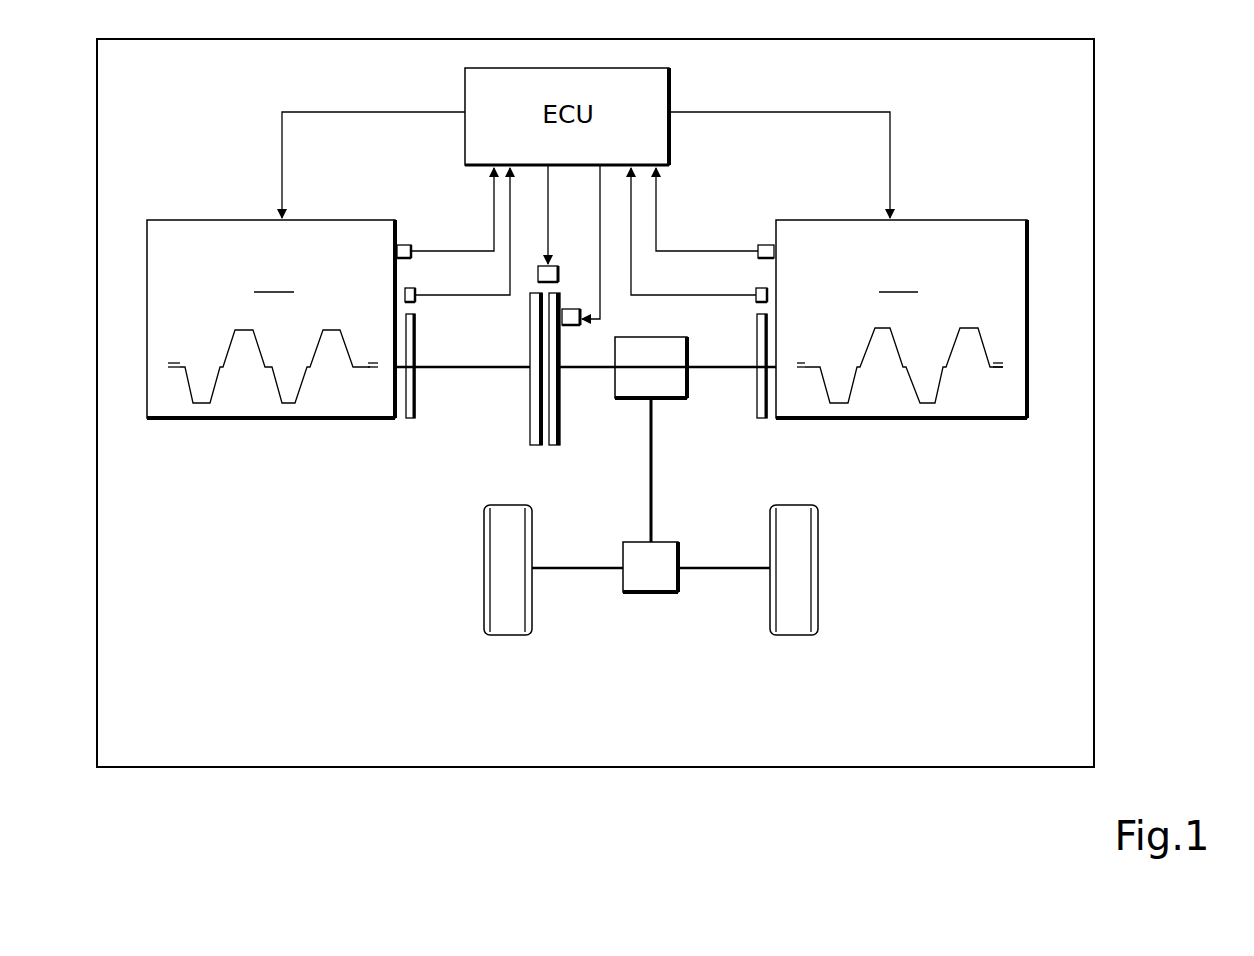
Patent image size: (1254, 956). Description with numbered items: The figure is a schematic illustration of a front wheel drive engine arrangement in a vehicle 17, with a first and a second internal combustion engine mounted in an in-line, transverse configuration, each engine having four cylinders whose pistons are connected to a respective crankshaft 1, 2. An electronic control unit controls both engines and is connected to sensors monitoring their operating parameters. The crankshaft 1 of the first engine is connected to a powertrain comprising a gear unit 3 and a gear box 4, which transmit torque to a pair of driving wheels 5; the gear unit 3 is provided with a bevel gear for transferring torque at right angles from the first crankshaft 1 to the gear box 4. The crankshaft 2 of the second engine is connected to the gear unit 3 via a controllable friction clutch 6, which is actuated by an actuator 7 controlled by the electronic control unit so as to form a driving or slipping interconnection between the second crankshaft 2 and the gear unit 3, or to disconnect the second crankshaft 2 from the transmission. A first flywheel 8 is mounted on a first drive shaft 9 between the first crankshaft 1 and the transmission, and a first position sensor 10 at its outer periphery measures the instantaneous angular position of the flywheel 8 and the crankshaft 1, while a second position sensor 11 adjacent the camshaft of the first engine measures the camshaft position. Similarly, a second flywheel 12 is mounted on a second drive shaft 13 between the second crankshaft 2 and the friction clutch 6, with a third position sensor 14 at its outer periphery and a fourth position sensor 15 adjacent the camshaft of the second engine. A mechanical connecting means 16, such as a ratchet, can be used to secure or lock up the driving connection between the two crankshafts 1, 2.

The crankshaft 1 is at (925, 405).
The crankshaft 2 is at (288, 403).
The gear unit 3 is at (643, 381).
The gear box 4 is at (643, 582).
The driving wheels 5 is at (502, 635).
The friction clutch 6 is at (530, 408).
The actuator 7 is at (570, 326).
The first flywheel 8 is at (762, 420).
The first drive shaft 9 is at (712, 369).
The first position sensor 10 is at (758, 289).
The second position sensor 11 is at (770, 250).
The second flywheel 12 is at (410, 418).
The second drive shaft 13 is at (460, 369).
The third position sensor 14 is at (417, 289).
The fourth position sensor 15 is at (401, 245).
The mechanical connecting means 16 is at (537, 273).
The vehicle 17 is at (1094, 402).